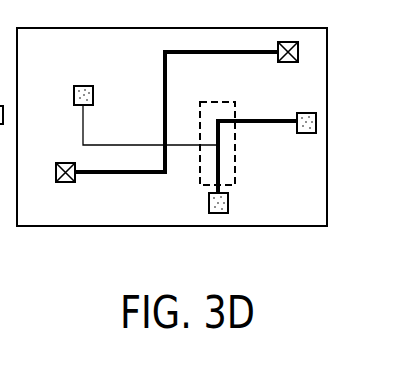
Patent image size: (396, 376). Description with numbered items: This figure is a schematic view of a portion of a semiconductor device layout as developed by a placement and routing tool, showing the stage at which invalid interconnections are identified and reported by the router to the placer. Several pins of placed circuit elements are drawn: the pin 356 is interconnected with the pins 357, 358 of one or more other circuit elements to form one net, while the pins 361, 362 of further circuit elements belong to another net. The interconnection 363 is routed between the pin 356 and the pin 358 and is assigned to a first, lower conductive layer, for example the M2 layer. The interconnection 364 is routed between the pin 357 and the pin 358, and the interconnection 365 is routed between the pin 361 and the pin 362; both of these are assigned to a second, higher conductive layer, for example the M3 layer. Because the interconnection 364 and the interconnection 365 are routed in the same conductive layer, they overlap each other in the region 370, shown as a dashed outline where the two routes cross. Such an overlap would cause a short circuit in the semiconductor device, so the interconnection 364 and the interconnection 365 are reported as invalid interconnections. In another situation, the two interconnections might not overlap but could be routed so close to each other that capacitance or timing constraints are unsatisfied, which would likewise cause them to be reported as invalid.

The pin 356 is at (74, 100).
The pin 357 is at (305, 133).
The pin 358 is at (216, 213).
The pin 361 is at (300, 48).
The pin 362 is at (62, 183).
The interconnection 363 is at (124, 143).
The interconnection 364 is at (250, 120).
The interconnection 365 is at (137, 175).
The region 370 is at (235, 163).